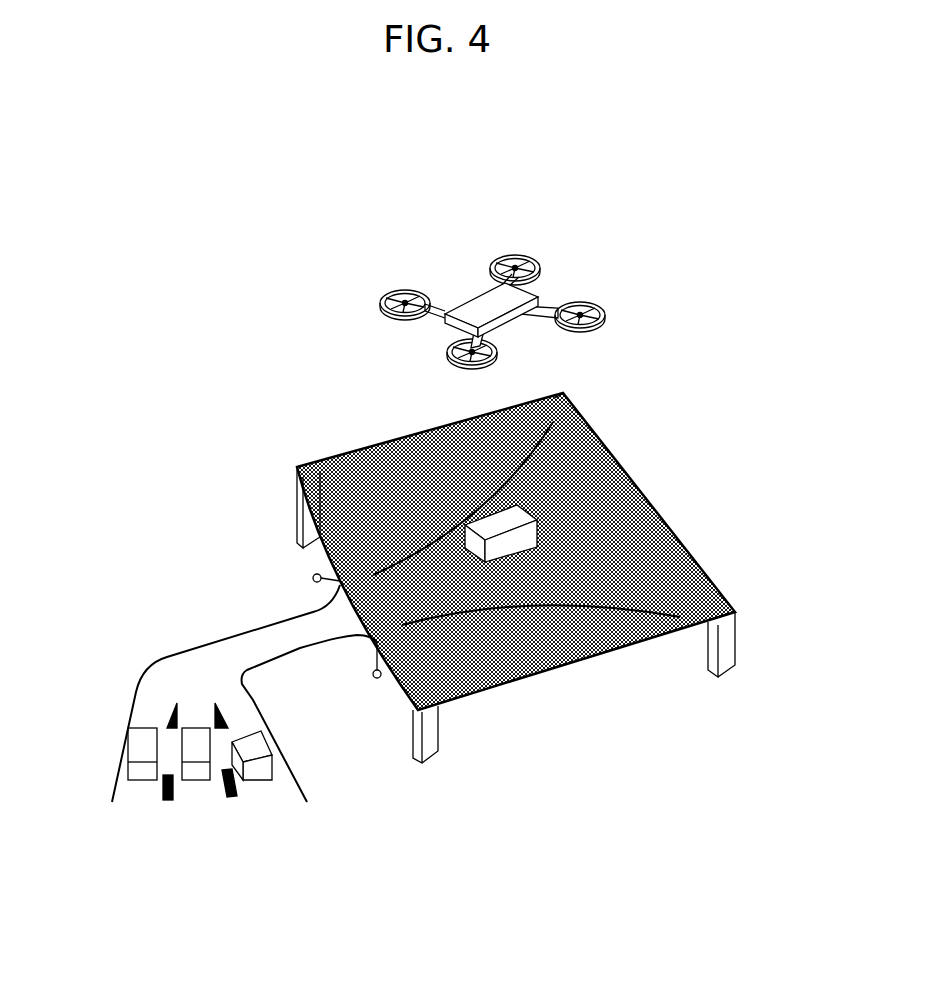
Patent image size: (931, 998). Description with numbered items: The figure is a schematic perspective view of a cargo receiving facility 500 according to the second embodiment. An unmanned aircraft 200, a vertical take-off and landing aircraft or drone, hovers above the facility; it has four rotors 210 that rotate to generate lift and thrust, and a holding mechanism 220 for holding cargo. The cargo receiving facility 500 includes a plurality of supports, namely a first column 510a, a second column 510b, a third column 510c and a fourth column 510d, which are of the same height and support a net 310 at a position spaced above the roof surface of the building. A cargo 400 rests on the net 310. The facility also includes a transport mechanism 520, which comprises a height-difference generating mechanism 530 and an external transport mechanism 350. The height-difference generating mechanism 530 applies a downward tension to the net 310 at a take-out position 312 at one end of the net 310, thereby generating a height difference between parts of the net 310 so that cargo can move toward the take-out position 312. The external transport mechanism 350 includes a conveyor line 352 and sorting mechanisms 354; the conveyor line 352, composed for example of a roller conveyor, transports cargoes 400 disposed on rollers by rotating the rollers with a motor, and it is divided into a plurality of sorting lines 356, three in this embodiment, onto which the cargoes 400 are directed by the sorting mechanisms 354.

The unmanned aircraft 200 is at (501, 286).
The rotors 210 is at (405, 290).
The holding mechanism 220 is at (500, 332).
The net 310 is at (415, 433).
The take-out position 312 is at (352, 613).
The external transport mechanism 350 is at (226, 693).
The conveyor line 352 is at (238, 647).
The sorting mechanisms 354 is at (166, 713).
The sorting lines 356 is at (140, 797).
The cargoes 400 is at (538, 521).
The cargo receiving facility 500 is at (515, 510).
The first column 510a is at (296, 489).
The second column 510b is at (438, 728).
The third column 510c is at (570, 396).
The fourth column 510d is at (738, 633).
The transport mechanism 520 is at (215, 618).
The height-difference generating mechanism 530 is at (313, 578).